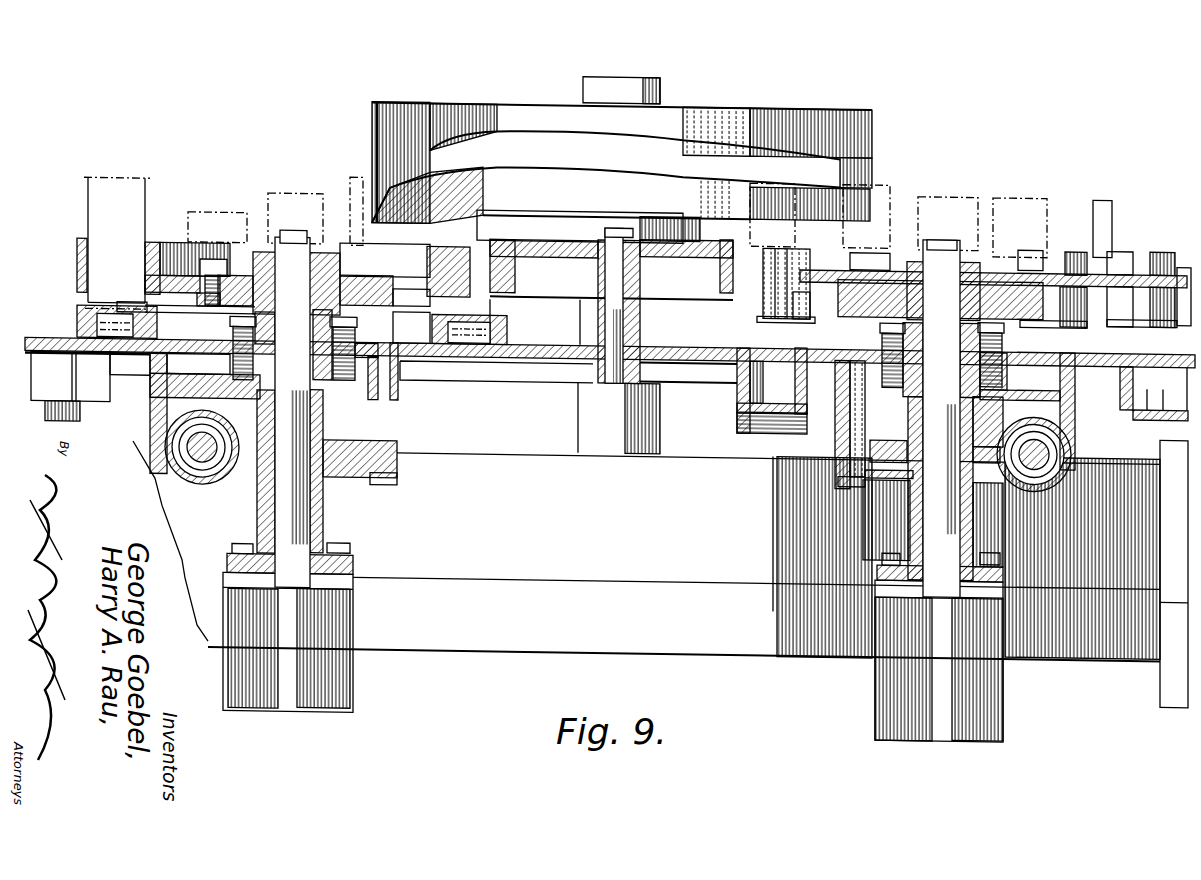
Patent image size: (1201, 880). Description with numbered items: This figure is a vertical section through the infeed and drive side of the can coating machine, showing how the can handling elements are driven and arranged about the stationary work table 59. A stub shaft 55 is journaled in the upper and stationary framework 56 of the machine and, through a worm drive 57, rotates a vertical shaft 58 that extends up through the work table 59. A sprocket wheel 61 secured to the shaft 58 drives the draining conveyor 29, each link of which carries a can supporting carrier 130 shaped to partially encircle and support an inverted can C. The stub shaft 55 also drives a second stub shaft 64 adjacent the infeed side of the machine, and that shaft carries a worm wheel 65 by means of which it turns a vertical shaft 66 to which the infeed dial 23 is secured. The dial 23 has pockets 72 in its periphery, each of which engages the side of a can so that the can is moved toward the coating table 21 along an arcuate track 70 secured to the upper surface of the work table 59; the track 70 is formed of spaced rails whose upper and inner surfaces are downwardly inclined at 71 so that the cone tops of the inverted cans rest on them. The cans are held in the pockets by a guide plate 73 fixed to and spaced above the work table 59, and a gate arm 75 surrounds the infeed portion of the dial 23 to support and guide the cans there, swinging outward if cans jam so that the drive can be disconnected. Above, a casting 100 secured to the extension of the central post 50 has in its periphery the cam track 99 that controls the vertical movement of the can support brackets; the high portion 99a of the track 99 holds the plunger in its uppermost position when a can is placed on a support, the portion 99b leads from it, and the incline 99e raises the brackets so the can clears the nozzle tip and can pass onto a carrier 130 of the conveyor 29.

The coating table 21 is at (540, 354).
The infeed dial 23 is at (427, 263).
The draining conveyor 29 is at (1110, 253).
The central post 50 is at (613, 411).
The stub shaft 55 is at (1050, 431).
The stationary framework 56 is at (333, 676).
The worm drive 57 is at (1010, 418).
The vertical shaft 58 is at (943, 256).
The stationary work table 59 is at (690, 340).
The sprocket wheel 61 is at (827, 261).
The second stub shaft 64 is at (208, 440).
The worm wheel 65 is at (200, 420).
The vertical shaft 66 is at (292, 424).
The arcuate track 70 is at (76, 318).
The inclined surface 71 is at (148, 306).
The pocket 72 is at (146, 252).
The guide plate 73 is at (516, 269).
The gate arm 75 is at (77, 259).
The cam track 99 is at (860, 150).
The high portion of cam track 99a is at (527, 130).
The cam rise 99b is at (483, 136).
The incline of cam track 99e is at (683, 133).
The casting 100 is at (780, 105).
The can supporting carrier 130 is at (808, 306).
The can C is at (147, 200).